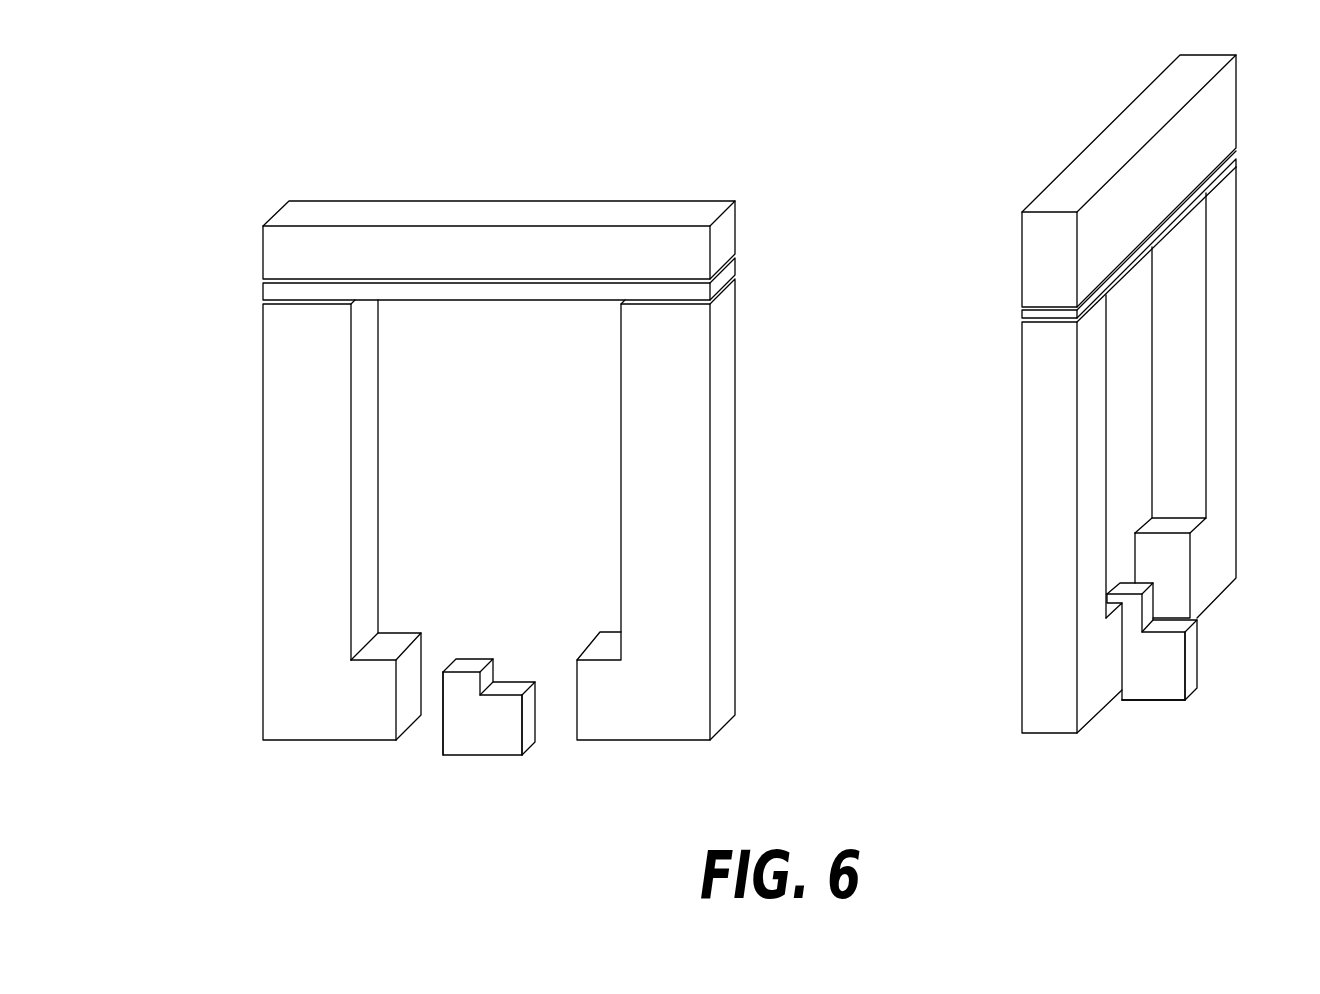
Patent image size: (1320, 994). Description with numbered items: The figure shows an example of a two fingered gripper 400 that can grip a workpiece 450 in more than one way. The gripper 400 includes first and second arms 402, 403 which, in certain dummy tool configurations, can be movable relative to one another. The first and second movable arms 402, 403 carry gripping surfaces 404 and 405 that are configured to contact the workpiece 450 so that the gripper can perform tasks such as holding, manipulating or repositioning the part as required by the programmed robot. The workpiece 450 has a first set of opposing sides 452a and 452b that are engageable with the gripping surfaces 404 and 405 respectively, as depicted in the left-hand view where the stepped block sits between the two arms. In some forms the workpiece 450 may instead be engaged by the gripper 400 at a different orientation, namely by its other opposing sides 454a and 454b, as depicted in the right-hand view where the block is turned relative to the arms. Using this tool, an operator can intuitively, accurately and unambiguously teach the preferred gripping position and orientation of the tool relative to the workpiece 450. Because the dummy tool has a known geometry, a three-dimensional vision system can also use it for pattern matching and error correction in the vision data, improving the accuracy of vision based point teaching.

The two fingered gripper 400 is at (503, 173).
The first arm 402 is at (280, 432).
The second arm 403 is at (677, 420).
The gripping surface 404 is at (408, 667).
The gripping surface 405 is at (575, 683).
The workpiece 450 is at (480, 725).
The first opposing side 452a is at (442, 735).
The second opposing side 452b is at (528, 735).
The opposing side 454a is at (1154, 677).
The opposing side 454b is at (1200, 650).